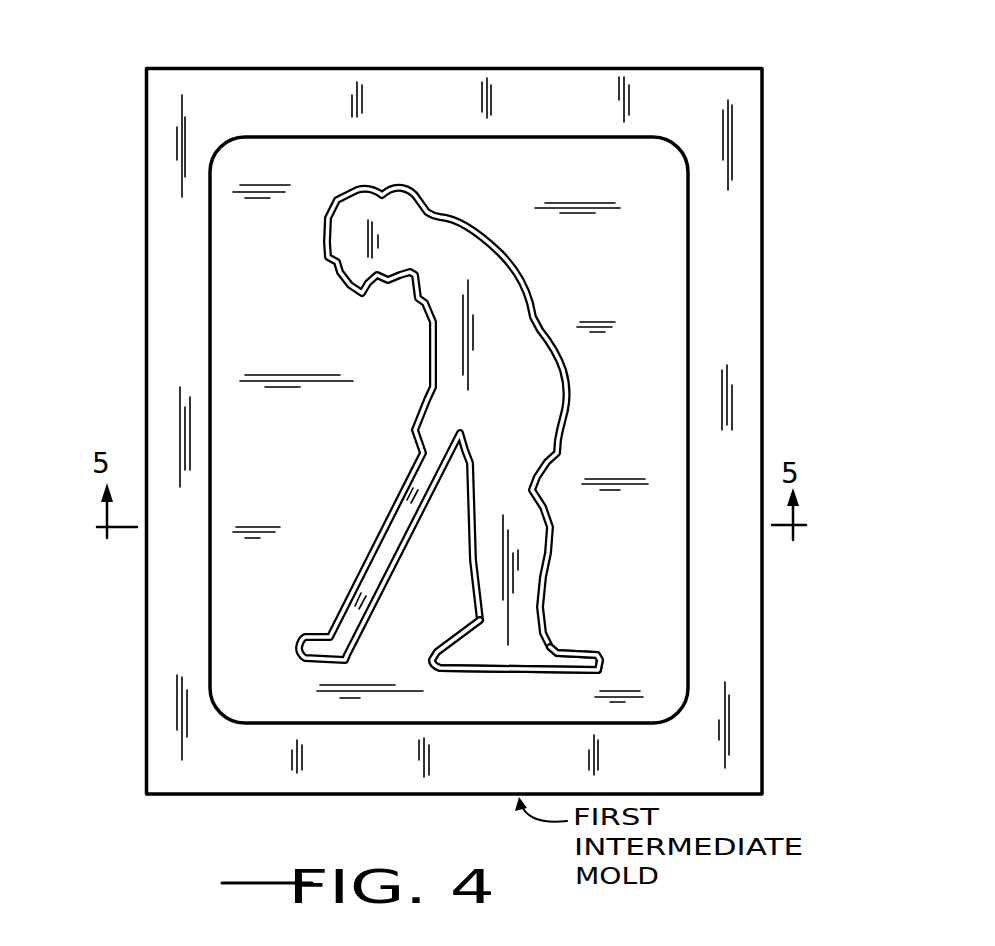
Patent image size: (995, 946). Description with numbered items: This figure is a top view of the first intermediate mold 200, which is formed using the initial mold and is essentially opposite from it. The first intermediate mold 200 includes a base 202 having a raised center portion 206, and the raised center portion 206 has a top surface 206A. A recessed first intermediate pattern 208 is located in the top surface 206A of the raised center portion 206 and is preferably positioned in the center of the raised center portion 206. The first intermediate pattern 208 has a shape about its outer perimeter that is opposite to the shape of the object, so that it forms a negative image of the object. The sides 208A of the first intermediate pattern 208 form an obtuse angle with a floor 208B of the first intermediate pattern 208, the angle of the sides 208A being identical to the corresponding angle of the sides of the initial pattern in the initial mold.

The first intermediate mold 200 is at (393, 56).
The base 202 is at (730, 298).
The raised center portion 206 is at (657, 244).
The top surface 206A is at (250, 332).
The first intermediate pattern 208 is at (515, 538).
The sides 208A is at (557, 637).
The floor 208B is at (513, 437).